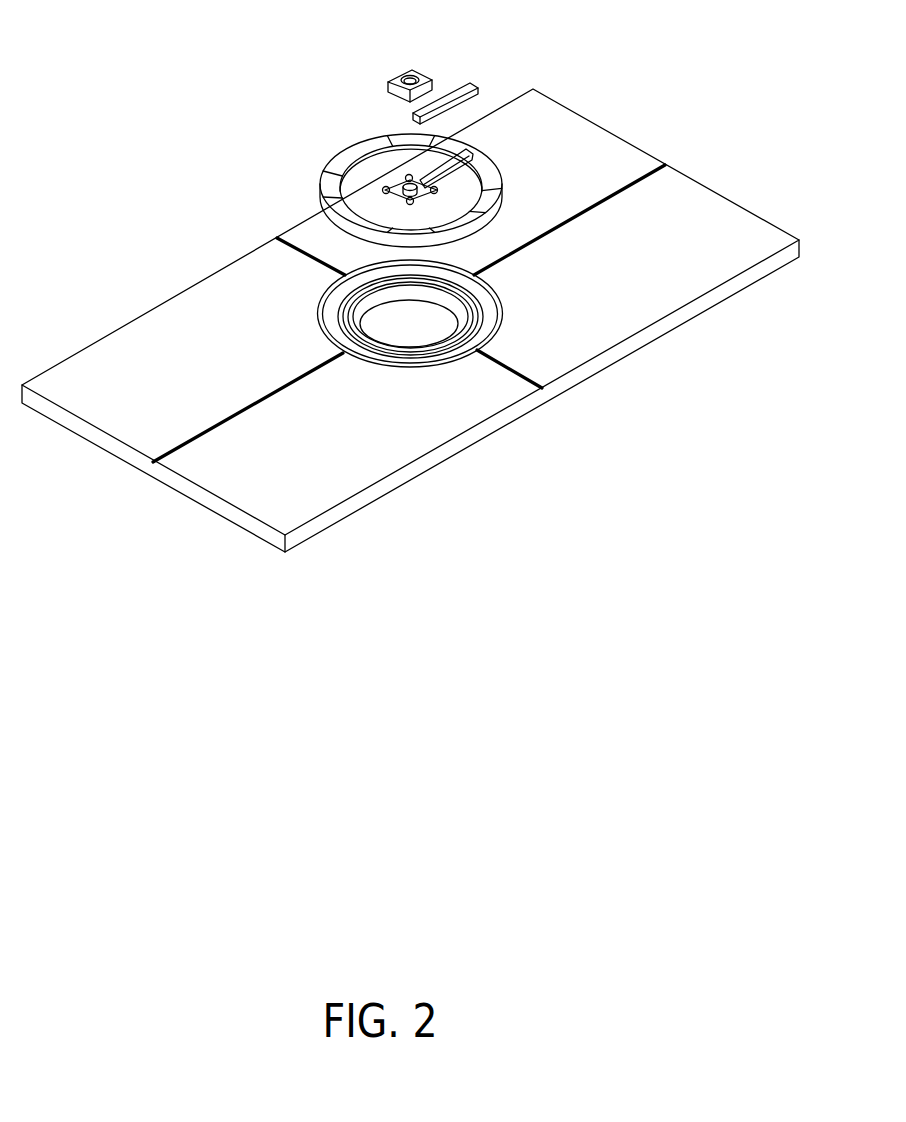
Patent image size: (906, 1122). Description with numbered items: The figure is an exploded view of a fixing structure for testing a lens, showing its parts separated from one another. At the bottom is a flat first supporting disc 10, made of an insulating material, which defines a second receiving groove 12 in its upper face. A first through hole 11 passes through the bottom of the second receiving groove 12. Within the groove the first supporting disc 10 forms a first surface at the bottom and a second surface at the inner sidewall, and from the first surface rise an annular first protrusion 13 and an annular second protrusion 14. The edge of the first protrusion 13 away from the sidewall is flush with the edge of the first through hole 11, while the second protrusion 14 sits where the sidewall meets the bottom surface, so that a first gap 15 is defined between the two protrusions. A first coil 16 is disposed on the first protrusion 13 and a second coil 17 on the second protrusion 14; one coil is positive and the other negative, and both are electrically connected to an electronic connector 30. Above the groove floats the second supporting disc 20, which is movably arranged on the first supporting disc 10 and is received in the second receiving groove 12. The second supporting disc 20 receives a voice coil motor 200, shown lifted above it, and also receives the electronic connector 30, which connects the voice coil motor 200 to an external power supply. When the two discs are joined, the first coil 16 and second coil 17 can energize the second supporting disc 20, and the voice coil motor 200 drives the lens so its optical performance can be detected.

The first supporting disc 10 is at (600, 337).
The first through hole 11 is at (400, 338).
The second receiving groove 12 is at (377, 290).
The first protrusion 13 is at (480, 300).
The second protrusion 14 is at (473, 280).
The first gap 15 is at (328, 323).
The first coil 16 is at (453, 357).
The second coil 17 is at (322, 305).
The second supporting disc 20 is at (335, 170).
The electronic connector 30 is at (470, 80).
The voice coil motor 200 is at (393, 70).